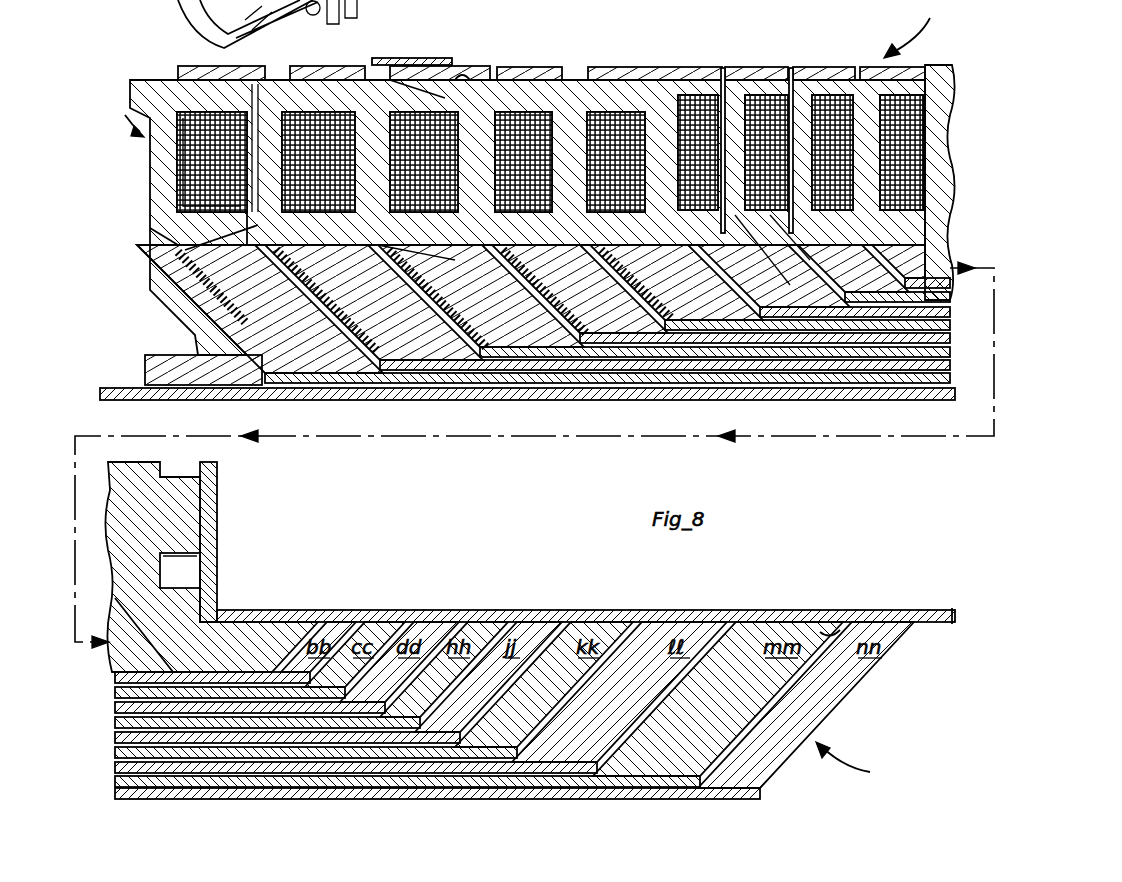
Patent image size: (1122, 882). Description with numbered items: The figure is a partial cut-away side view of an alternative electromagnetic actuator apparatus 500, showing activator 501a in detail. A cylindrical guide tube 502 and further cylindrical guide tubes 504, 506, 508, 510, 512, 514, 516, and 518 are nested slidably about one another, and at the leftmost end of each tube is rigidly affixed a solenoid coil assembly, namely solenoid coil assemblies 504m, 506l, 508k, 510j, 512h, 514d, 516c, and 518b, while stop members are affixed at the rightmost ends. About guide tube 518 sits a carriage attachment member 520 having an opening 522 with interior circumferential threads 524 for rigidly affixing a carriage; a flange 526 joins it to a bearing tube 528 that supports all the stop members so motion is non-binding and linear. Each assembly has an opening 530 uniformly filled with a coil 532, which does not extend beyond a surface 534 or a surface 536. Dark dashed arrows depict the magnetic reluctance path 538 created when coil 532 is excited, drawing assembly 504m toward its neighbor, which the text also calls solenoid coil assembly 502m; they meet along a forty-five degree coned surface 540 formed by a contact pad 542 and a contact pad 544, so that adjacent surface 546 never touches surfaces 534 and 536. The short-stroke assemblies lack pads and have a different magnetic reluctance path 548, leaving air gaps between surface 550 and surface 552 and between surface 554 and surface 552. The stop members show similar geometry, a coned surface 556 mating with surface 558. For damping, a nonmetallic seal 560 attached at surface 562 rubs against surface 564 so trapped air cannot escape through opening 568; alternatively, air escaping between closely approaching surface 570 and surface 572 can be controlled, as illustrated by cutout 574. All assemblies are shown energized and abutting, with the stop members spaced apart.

The electromagnetic actuator apparatus 500 is at (861, 763).
The activator 501a is at (911, 29).
The cylindrical guide tube 502 is at (244, 392).
The solenoid coil assembly 502m is at (203, 370).
The cylindrical guide tube 504 is at (340, 392).
The solenoid coil assembly 504m is at (338, 358).
The cylindrical guide tube 506 is at (432, 370).
The solenoid coil assembly 506l is at (394, 313).
The cylindrical guide tube 508 is at (520, 354).
The solenoid coil assembly 508k is at (497, 306).
The cylindrical guide tube 510 is at (600, 330).
The solenoid coil assembly 510j is at (572, 283).
The cylindrical guide tube 512 is at (718, 320).
The solenoid coil assembly 512h is at (692, 270).
The cylindrical guide tube 514 is at (820, 310).
The solenoid coil assembly 514d is at (800, 276).
The cylindrical guide tube 516 is at (886, 302).
The solenoid coil assembly 516c is at (870, 270).
The cylindrical guide tube 518 is at (928, 278).
The solenoid coil assembly 518b is at (920, 243).
The carriage attachment member 520 is at (938, 186).
The opening 522 is at (180, 573).
The interior circumferential threads 524 is at (195, 557).
The flange 526 is at (217, 514).
The bearing tube 528 is at (290, 610).
The opening 530 is at (172, 180).
The coil 532 is at (195, 142).
The surface 534 is at (246, 215).
The surface 536 is at (278, 110).
The magnetic reluctance path 538 is at (109, 114).
The surface 540 is at (221, 297).
The contact pad 542 is at (200, 292).
The contact pad 544 is at (262, 318).
The surface 546 is at (262, 246).
The magnetic reluctance path 548 is at (742, 74).
The surface 550 is at (793, 74).
The surface 552 is at (784, 216).
The surface 554 is at (780, 218).
The coned surface 556 is at (890, 628).
The surface 558 is at (835, 628).
The nonmetallic seal 560 is at (428, 64).
The surface 562 is at (426, 82).
The surface 564 is at (492, 52).
The opening 568 is at (400, 60).
The surface 570 is at (165, 230).
The surface 572 is at (258, 246).
The cutout 574 is at (425, 262).